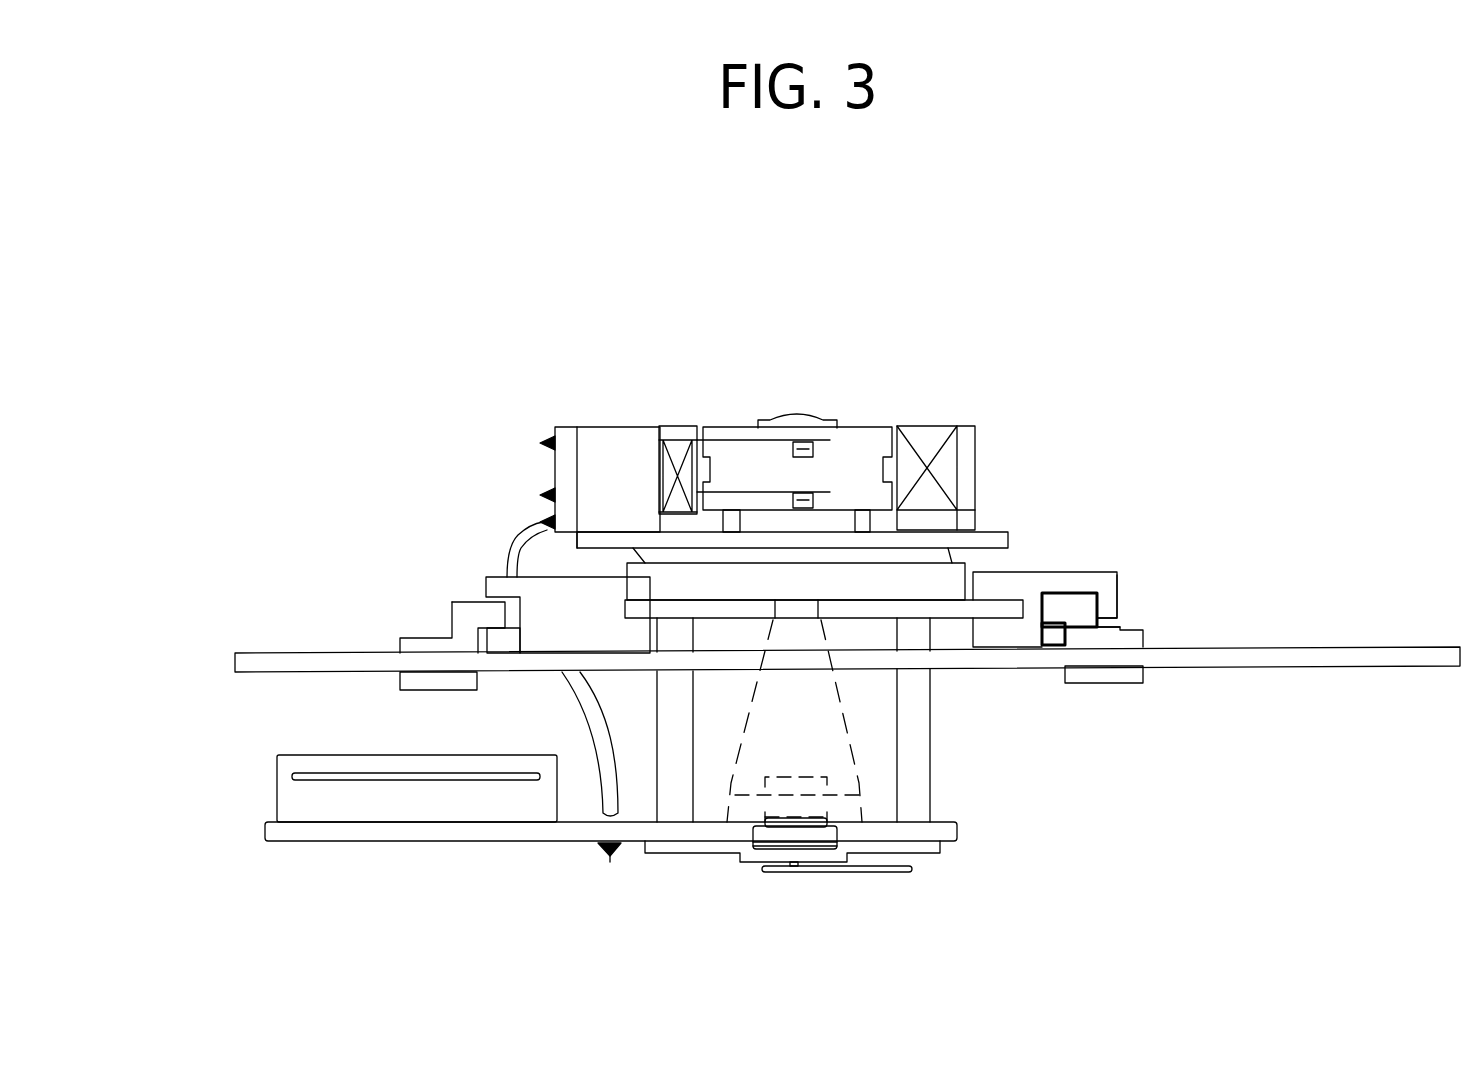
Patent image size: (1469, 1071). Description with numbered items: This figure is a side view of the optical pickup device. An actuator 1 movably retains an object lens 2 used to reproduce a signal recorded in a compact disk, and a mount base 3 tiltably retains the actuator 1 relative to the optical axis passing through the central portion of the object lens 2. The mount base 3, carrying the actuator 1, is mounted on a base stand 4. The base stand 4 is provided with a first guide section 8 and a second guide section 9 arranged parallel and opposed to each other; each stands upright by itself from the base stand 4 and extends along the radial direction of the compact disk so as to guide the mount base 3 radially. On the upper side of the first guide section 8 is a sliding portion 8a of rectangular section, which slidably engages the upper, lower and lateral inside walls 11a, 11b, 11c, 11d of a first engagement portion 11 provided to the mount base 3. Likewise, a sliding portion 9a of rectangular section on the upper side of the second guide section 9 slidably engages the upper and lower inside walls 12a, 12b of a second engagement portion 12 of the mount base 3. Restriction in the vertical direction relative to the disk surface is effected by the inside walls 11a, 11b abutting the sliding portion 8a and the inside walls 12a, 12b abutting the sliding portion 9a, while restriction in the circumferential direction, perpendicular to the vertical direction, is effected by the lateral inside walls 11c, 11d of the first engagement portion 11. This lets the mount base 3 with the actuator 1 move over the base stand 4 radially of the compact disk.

The actuator 1 is at (870, 443).
The object lens 2 is at (800, 418).
The mount base 3 is at (877, 608).
The base stand 4 is at (1376, 650).
The first guide section 8 is at (1132, 638).
The sliding portion 8a is at (1063, 602).
The second guide section 9 is at (408, 633).
The sliding portion 9a is at (463, 602).
The first engagement portion 11 is at (1023, 583).
The upper inside wall 11a is at (1097, 580).
The lower inside wall 11b is at (1050, 640).
The lateral inside wall 11c is at (1110, 612).
The lateral inside wall 11d is at (1040, 610).
The second engagement portion 12 is at (600, 588).
The upper inside wall 12a is at (497, 577).
The lower inside wall 12b is at (503, 643).